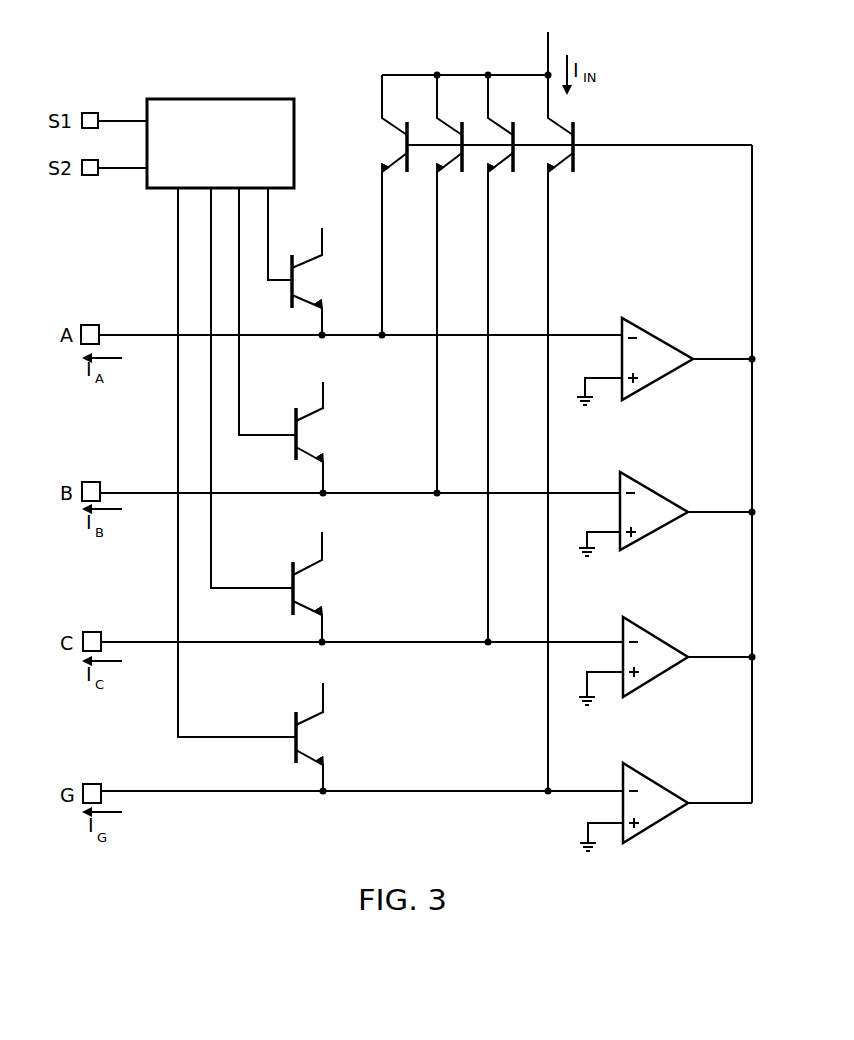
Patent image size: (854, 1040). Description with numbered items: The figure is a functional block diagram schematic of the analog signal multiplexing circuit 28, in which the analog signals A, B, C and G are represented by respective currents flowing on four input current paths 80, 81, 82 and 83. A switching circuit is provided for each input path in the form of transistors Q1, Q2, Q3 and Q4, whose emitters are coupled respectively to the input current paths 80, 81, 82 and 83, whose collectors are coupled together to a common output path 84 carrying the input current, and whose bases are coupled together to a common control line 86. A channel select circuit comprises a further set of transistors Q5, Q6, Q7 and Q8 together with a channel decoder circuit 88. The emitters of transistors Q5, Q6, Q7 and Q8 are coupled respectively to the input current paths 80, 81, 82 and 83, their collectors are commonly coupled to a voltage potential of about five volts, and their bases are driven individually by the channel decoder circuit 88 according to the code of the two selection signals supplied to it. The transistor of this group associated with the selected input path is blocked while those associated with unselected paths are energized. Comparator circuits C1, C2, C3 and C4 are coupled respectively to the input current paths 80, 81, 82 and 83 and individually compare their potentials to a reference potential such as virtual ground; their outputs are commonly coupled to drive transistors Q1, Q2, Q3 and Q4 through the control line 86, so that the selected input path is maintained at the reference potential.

The analog signal multiplexing circuit 28 is at (751, 126).
The input current path 80 is at (362, 333).
The input current path 81 is at (398, 493).
The input current path 82 is at (413, 642).
The input current path 83 is at (415, 791).
The common output path 84 is at (548, 43).
The common control line 86 is at (672, 149).
The channel decoder circuit 88 is at (249, 82).
The transistor Q1 is at (397, 118).
The transistor Q2 is at (450, 118).
The transistor Q3 is at (501, 118).
The transistor Q4 is at (566, 117).
The transistor Q5 is at (303, 253).
The transistor Q6 is at (306, 407).
The transistor Q7 is at (308, 560).
The transistor Q8 is at (309, 708).
The comparator circuit C1 is at (653, 335).
The comparator circuit C2 is at (655, 490).
The comparator circuit C3 is at (660, 640).
The comparator circuit C4 is at (662, 788).